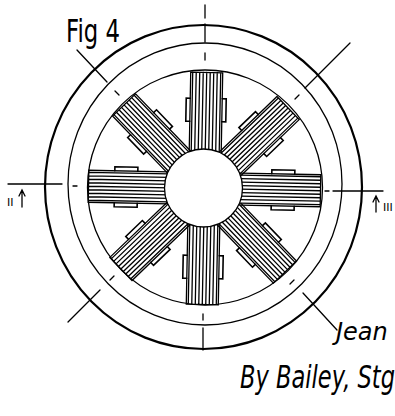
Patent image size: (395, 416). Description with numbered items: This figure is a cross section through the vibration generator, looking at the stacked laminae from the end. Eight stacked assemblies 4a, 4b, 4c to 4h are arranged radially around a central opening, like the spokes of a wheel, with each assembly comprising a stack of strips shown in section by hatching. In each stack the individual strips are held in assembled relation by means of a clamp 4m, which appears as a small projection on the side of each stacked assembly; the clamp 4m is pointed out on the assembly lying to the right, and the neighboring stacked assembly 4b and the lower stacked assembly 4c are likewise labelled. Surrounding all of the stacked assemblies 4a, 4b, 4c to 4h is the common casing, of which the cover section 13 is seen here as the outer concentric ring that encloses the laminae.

The stacked assembly 4h is at (212, 68).
The stacked assembly 4a is at (285, 100).
The stacked assembly 4b is at (305, 205).
The stacked assembly 4c is at (273, 275).
The clamp 4m is at (275, 172).
The cover section 13 is at (324, 283).